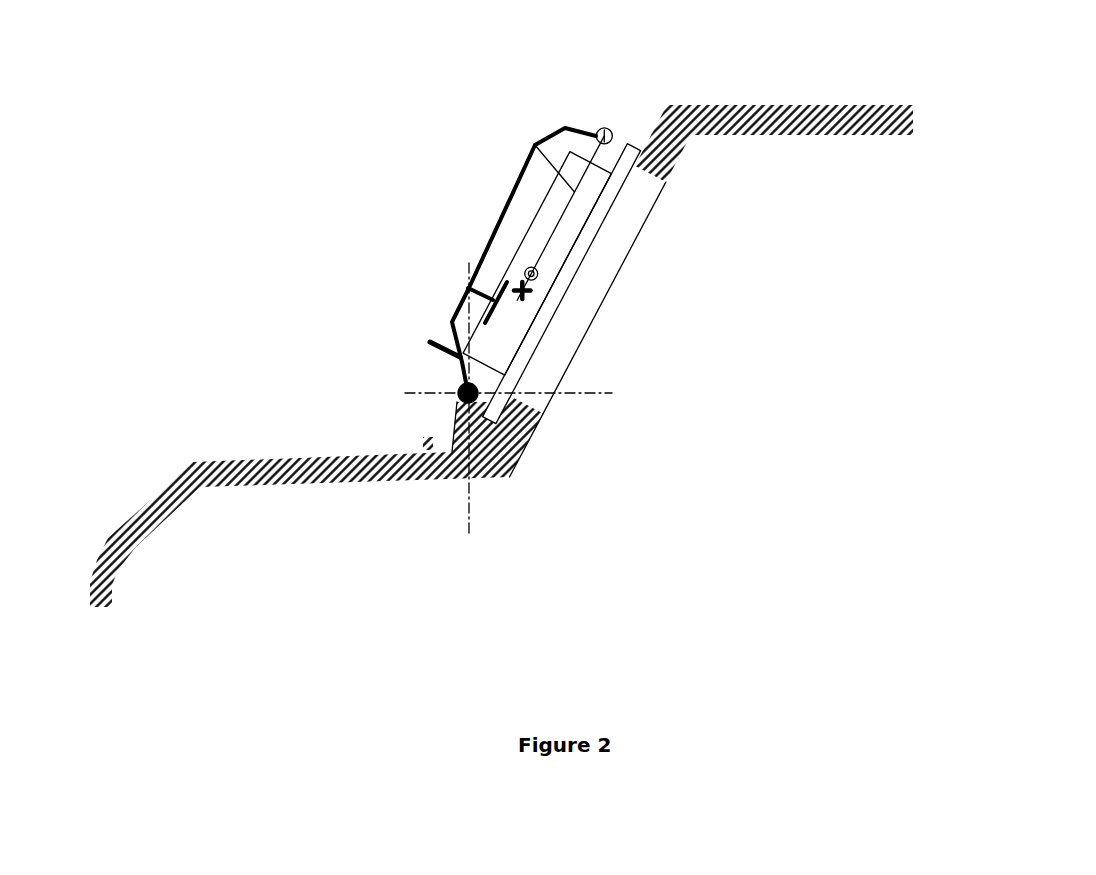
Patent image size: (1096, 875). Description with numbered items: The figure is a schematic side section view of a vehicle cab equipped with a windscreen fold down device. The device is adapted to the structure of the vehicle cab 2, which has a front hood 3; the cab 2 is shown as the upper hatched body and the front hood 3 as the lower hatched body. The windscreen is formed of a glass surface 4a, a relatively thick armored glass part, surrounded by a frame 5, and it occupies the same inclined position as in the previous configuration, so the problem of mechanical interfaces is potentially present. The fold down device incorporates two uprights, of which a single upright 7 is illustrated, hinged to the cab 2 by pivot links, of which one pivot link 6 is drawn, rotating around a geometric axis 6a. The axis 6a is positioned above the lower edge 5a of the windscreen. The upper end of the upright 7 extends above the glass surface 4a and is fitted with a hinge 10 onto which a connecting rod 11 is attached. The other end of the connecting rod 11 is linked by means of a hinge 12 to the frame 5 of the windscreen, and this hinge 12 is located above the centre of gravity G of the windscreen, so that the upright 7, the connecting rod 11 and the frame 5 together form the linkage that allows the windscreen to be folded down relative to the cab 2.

The cab 2 is at (748, 104).
The front hood 3 is at (137, 510).
The glass surface 4a is at (563, 245).
The frame 5 is at (618, 193).
The lower edge 5a is at (492, 427).
The pivot link 6 is at (460, 388).
The geometric axis 6a is at (455, 404).
The upright 7 is at (565, 128).
The hinge 10 is at (604, 128).
The connecting rod 11 is at (533, 143).
The hinge 12 is at (528, 268).
The centre of gravity G is at (525, 296).